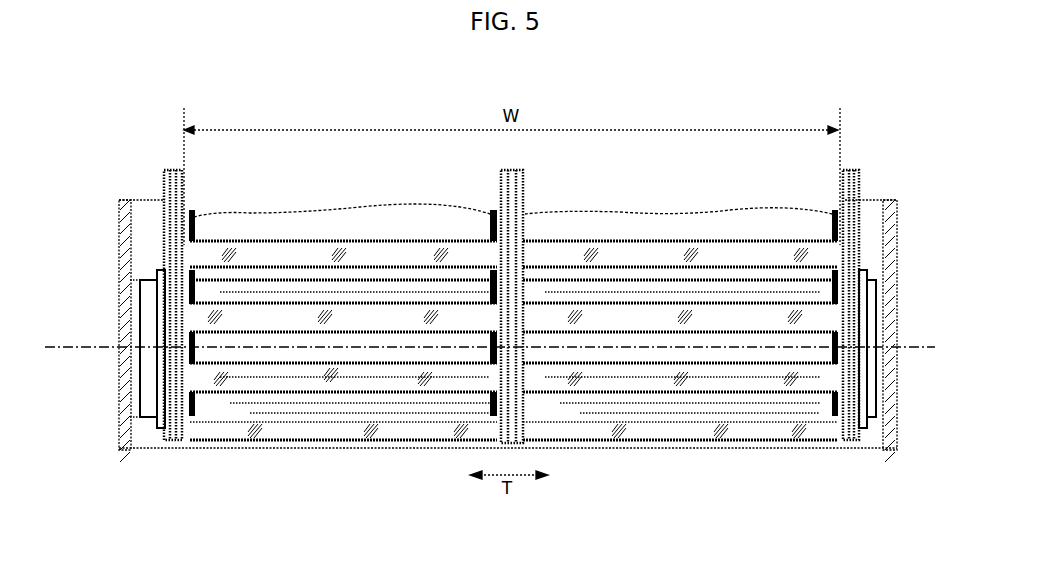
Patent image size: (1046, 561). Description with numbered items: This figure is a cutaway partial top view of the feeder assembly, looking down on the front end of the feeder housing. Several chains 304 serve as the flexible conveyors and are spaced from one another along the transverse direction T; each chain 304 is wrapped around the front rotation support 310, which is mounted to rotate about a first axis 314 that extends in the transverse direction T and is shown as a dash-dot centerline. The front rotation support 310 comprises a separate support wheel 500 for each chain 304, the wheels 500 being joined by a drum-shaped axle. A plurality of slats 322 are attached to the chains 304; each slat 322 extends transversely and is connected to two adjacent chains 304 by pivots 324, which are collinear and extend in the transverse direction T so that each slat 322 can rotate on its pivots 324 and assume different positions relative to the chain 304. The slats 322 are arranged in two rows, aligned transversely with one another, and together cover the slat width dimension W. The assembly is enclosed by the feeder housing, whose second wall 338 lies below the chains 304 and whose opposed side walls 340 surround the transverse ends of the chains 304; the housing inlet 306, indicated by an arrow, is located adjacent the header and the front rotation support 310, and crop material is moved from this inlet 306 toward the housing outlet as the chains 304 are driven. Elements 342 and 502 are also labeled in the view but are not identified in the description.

The chain 304 is at (163, 183).
The housing inlet 306 is at (229, 448).
The front rotation support 310 is at (885, 300).
The first axis 314 is at (98, 347).
The slat 322 is at (312, 262).
The pivot 324 is at (545, 395).
The second wall 338 is at (147, 433).
The side wall 340 is at (130, 312).
The end wall 342 is at (195, 218).
The support wheel 500 is at (150, 272).
The bottom plate 502 is at (800, 425).